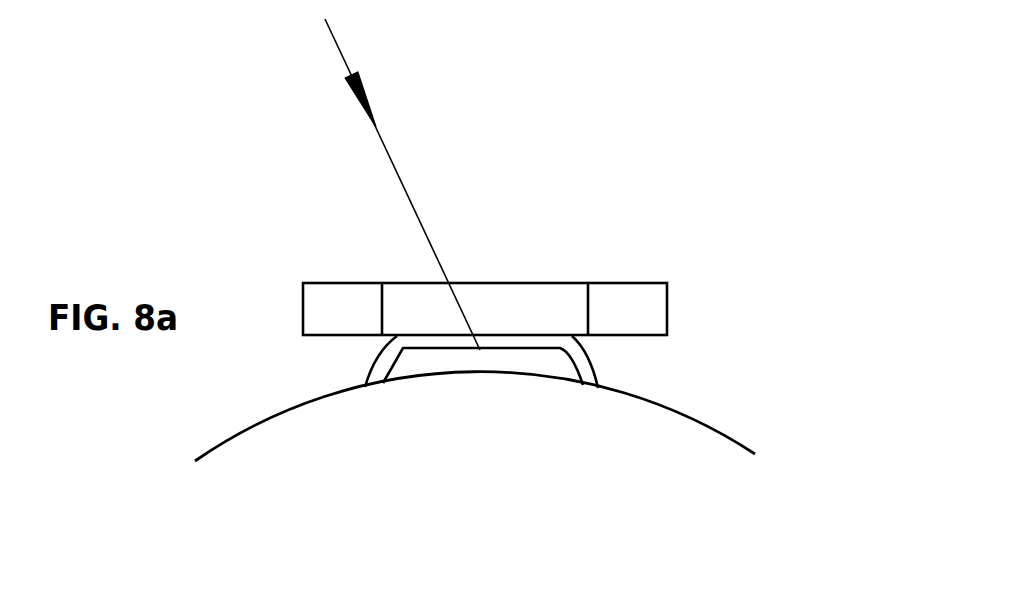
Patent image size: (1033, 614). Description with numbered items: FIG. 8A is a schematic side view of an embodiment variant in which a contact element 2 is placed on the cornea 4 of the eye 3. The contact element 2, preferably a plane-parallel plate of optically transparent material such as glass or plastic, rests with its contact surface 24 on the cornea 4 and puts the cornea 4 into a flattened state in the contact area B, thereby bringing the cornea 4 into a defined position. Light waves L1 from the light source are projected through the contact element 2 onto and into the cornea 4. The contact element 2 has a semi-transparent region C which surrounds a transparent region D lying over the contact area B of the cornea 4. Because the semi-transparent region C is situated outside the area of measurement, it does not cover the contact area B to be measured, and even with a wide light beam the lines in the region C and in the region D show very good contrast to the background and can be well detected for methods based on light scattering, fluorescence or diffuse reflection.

The light waves L1 is at (338, 45).
The semi-transparent region C is at (328, 292).
The transparent region D is at (527, 295).
The contact surface 24 is at (627, 336).
The cornea 4 is at (580, 368).
The contact area B is at (448, 340).
The contact element 2 is at (518, 344).
The eye 3 is at (738, 443).